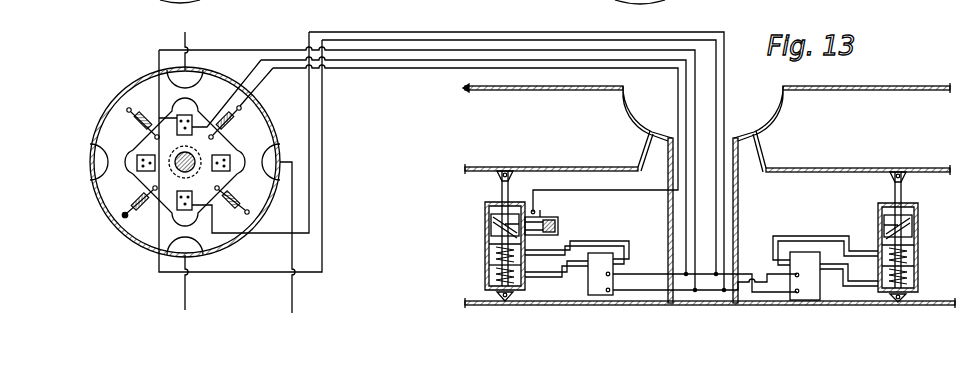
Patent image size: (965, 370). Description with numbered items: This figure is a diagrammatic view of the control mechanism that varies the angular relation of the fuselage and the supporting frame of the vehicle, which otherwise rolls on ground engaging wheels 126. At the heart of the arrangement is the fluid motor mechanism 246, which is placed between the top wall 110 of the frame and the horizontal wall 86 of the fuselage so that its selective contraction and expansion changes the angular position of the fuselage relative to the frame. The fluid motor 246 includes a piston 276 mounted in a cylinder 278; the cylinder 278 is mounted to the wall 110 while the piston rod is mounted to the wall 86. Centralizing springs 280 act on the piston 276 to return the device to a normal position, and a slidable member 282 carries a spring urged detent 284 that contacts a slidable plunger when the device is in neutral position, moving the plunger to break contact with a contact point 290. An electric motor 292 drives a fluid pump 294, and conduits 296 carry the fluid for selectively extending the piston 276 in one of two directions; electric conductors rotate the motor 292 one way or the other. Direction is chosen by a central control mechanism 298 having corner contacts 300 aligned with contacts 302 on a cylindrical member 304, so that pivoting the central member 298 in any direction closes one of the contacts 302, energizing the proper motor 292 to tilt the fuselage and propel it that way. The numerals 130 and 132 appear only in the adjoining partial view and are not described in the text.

The horizontal wall 86 is at (845, 167).
The top wall 110 is at (917, 304).
The ground engaging wheels 126 is at (588, 7).
The wheel element 130 is at (130, 19).
The wheel element 132 is at (107, 7).
The fluid motor mechanism 246 is at (497, 233).
The piston 276 is at (490, 270).
The cylinder 278 is at (488, 247).
The centralizing springs 280 is at (515, 297).
The slidable member 282 is at (490, 226).
The spring urged detent 284 is at (511, 200).
The contact point 290 is at (536, 210).
The electric motor 292 is at (598, 297).
The fluid pump 294 is at (600, 258).
The conduits 296 is at (567, 243).
The central control mechanism 298 is at (153, 147).
The corner contacts 300 is at (93, 162).
The contacts 302 is at (105, 165).
The cylindrical member 304 is at (103, 210).